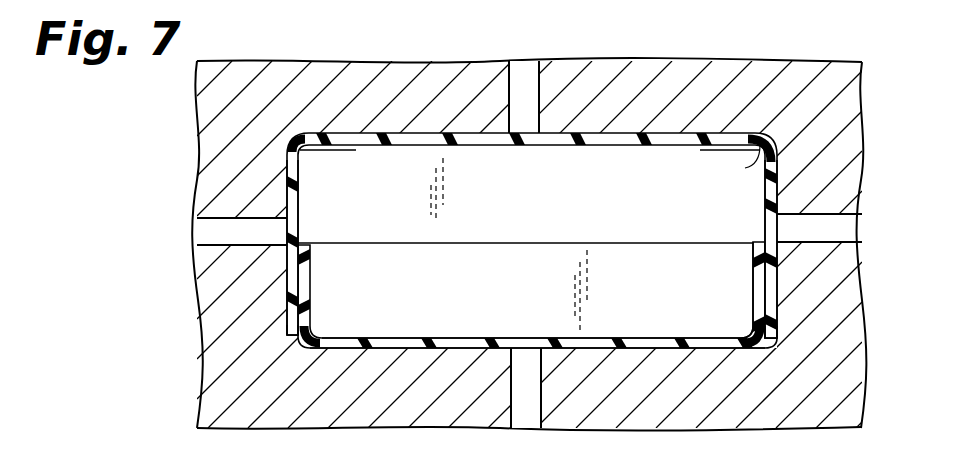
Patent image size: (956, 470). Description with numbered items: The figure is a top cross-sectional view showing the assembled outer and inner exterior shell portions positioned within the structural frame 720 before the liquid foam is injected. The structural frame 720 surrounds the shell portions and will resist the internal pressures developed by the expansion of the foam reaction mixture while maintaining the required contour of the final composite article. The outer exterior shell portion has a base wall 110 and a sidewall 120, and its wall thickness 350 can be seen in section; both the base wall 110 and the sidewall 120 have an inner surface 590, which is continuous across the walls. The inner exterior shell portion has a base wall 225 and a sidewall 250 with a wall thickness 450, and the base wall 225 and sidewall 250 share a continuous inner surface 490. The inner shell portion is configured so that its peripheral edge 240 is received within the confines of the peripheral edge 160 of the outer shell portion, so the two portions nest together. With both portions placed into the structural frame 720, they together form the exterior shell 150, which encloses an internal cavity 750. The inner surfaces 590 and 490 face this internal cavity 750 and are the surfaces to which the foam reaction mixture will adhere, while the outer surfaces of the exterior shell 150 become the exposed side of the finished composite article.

The structural frame 720 is at (402, 77).
The internal cavity 750 is at (414, 320).
The base wall 110 is at (531, 208).
The sidewall thickness 350 is at (741, 132).
The sidewall 120 is at (287, 161).
The inner surface 590 is at (296, 189).
The peripheral edge 240 is at (768, 256).
The sidewall 250 is at (535, 295).
The base wall 225 is at (537, 375).
The sidewall thickness 450 is at (641, 345).
The inner surface 490 is at (320, 338).
The peripheral edge 160 is at (781, 334).
The exterior shell 150 is at (282, 346).